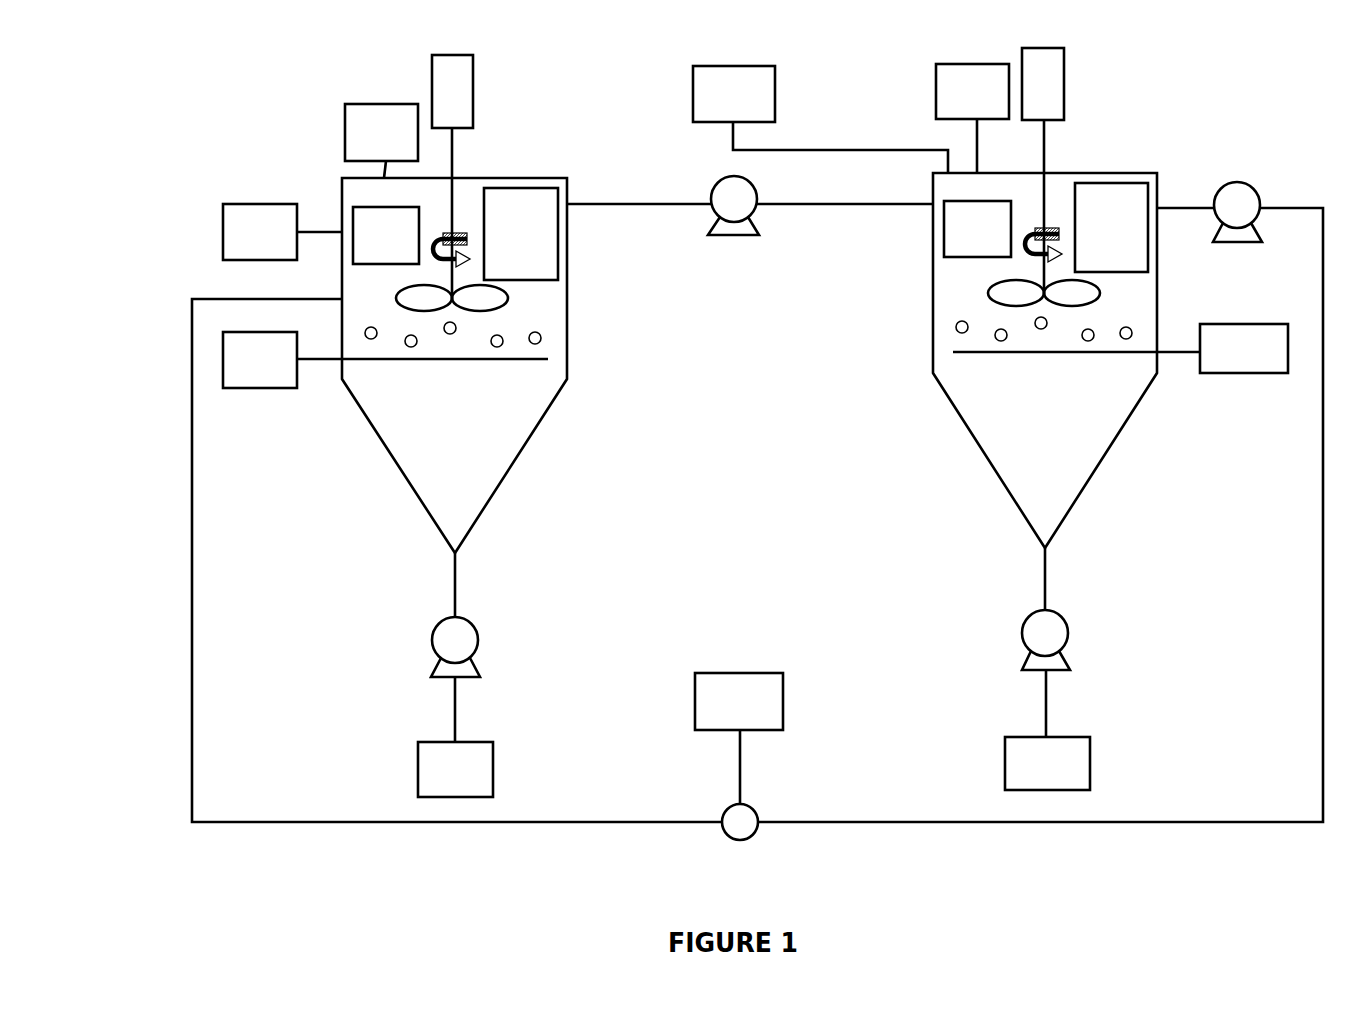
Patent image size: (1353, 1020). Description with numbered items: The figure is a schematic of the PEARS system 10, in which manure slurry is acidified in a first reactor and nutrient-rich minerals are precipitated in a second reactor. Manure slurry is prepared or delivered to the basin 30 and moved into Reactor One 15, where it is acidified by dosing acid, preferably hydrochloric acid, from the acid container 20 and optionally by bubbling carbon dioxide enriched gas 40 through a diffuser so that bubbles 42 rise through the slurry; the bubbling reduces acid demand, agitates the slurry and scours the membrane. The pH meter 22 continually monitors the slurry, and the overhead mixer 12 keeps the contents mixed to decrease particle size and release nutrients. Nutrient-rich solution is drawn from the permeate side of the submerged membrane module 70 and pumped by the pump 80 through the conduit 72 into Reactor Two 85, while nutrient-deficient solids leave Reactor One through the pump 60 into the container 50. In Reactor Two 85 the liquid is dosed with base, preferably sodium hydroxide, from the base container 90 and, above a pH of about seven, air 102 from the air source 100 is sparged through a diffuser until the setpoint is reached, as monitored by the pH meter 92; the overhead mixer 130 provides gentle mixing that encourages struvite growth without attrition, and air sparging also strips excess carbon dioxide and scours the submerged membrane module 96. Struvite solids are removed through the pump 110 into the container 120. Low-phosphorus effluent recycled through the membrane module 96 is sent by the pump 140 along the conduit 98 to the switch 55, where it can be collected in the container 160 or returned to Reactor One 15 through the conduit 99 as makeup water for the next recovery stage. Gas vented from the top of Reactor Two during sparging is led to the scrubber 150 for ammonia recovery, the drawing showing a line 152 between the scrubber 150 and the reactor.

The PEARS system 10 is at (283, 155).
The overhead mixer 12 is at (478, 92).
The Reactor #1 15 is at (520, 418).
The acid container 20 is at (381, 141).
The pH meter or multi-parameter meter 22 is at (386, 235).
The basin 30 is at (282, 232).
The CO2 enriched gas 40 is at (260, 360).
The bubbles 42 is at (547, 343).
The container 50 is at (455, 769).
The switch 55 is at (763, 807).
The pump 60 is at (428, 644).
The membrane module 70 is at (521, 234).
The conduit 72 is at (645, 210).
The pump 80 is at (713, 240).
The Reactor #2 85 is at (983, 408).
The base container 90 is at (972, 118).
The pH meter or multi-parameter meter 92 is at (977, 229).
The membrane module 96 is at (1111, 227).
The conduit 98 is at (1317, 472).
The conduit 99 is at (197, 543).
The air 100 is at (1244, 348).
The air 102 is at (950, 332).
The pump 110 is at (1018, 640).
The container 120 is at (1047, 763).
The overhead mixer 130 is at (1067, 90).
The pump 140 is at (1250, 175).
The scrubber 150 is at (734, 94).
The control line 152 is at (843, 145).
The container 160 is at (739, 739).